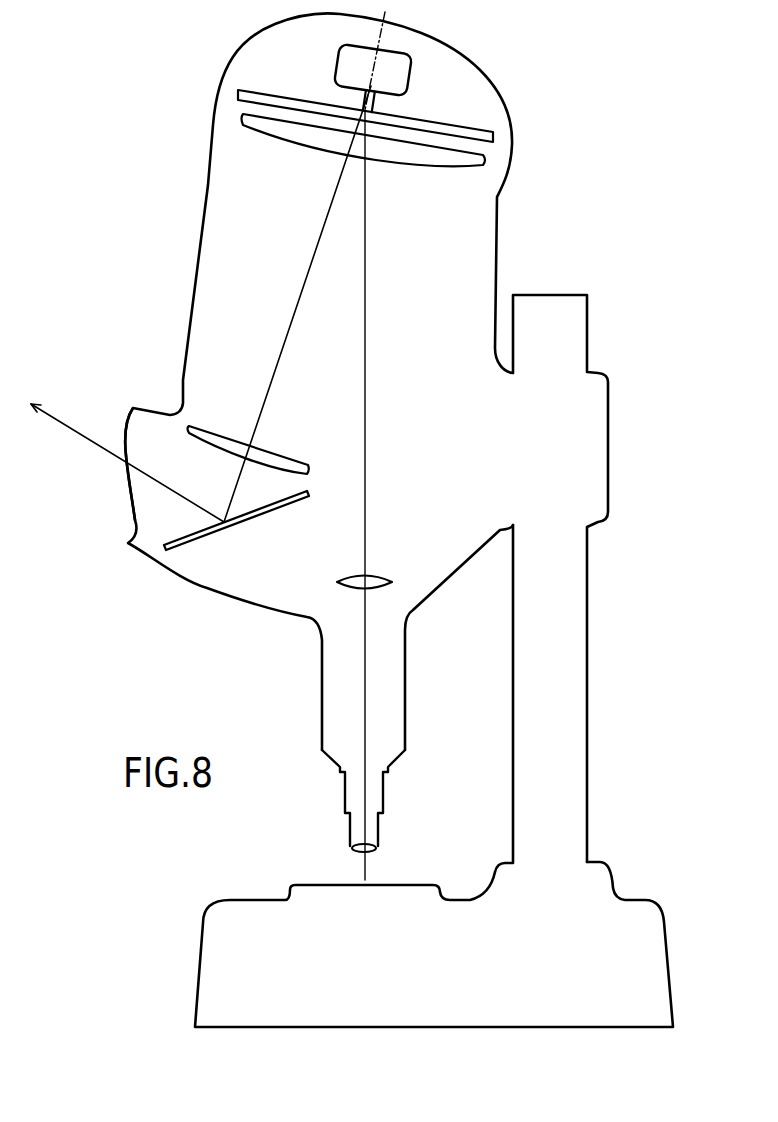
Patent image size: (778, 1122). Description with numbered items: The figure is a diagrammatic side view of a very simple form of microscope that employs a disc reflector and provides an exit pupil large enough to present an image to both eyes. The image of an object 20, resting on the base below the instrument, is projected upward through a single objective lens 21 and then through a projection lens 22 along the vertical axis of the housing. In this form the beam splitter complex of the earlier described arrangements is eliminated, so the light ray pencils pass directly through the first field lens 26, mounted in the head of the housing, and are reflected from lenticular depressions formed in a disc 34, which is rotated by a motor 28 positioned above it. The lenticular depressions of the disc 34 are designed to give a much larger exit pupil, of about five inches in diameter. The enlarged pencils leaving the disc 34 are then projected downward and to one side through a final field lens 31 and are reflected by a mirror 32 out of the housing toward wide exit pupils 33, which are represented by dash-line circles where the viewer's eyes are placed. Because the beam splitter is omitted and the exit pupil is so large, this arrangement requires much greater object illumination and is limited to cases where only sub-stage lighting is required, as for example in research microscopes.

The object 20 is at (368, 888).
The objective lens 21 is at (368, 830).
The projection lens 22 is at (386, 574).
The first field lens 26 is at (485, 152).
The motor 28 is at (345, 63).
The final field lens 31 is at (298, 463).
The mirror 32 is at (261, 514).
The exit pupils 33 is at (131, 490).
The disc 34 is at (486, 131).